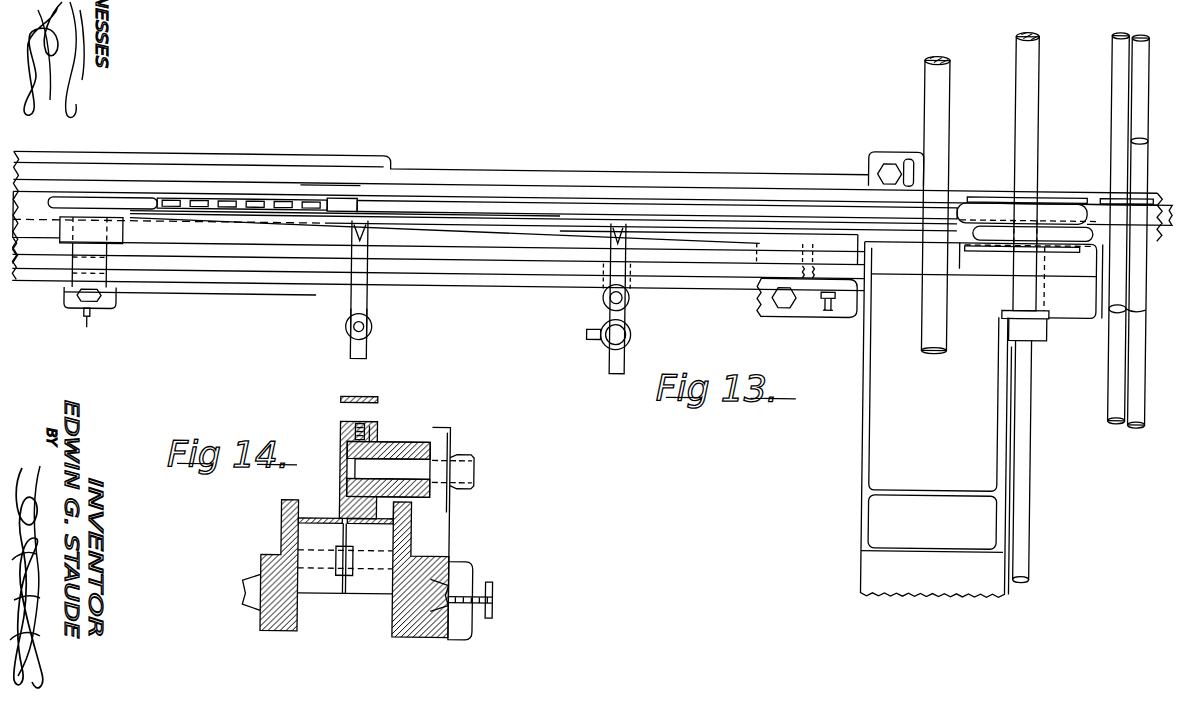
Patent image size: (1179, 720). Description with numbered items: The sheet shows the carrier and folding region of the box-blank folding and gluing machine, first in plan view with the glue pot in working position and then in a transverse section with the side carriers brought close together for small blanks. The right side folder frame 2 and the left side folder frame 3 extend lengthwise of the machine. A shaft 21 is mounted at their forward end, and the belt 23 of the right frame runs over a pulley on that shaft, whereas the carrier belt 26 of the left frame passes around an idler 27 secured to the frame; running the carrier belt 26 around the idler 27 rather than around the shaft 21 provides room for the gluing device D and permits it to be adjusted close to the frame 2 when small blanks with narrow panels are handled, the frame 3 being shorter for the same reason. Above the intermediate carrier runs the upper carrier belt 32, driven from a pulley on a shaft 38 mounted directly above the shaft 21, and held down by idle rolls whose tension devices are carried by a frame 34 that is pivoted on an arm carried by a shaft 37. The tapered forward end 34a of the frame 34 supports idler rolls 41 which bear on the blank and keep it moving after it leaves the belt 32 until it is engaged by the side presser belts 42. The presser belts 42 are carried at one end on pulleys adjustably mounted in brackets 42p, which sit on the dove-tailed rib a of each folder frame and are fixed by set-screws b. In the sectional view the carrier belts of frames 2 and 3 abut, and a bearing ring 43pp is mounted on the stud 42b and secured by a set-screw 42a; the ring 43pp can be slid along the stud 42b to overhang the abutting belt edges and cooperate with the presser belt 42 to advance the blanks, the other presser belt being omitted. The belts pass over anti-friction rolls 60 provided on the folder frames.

In FIG. 13, the right side folder frame 2 is at (475, 182).
In FIG. 14, the right side folder frame 2 is at (285, 536).
In FIG. 13, the left side folder frame 3 is at (480, 286).
In FIG. 14, the left side folder frame 3 is at (412, 636).
In FIG. 13, the shaft 21 is at (1114, 78).
In FIG. 13, the belt 23 is at (30, 202).
In FIG. 14, the belt 23 is at (332, 520).
In FIG. 13, the carrier belt 26 is at (262, 250).
In FIG. 14, the carrier belt 26 is at (420, 537).
In FIG. 13, the idler 27 is at (852, 282).
In FIG. 13, the upper carrier belt 32 is at (665, 208).
In FIG. 13, the frame 34 is at (346, 202).
In FIG. 13, the forward end of the frame 34a is at (105, 200).
In FIG. 13, the shaft 37 is at (923, 82).
In FIG. 13, the shaft 38 is at (1112, 143).
In FIG. 13, the idler rolls 41 is at (208, 208).
In FIG. 13, the side presser belts 42 is at (40, 238).
In FIG. 14, the side presser belts 42 is at (345, 520).
In FIG. 13, the brackets 42p is at (105, 296).
In FIG. 14, the brackets 42p is at (452, 433).
In FIG. 14, the set-screw 42a is at (372, 415).
In FIG. 14, the stud 42b is at (413, 472).
In FIG. 14, the ring 43pp is at (385, 430).
In FIG. 14, the anti-friction rolls 60 is at (320, 603).
In FIG. 13, the rib a is at (318, 165).
In FIG. 14, the rib a is at (255, 595).
In FIG. 13, the set-screws b is at (90, 332).
In FIG. 14, the set-screws b is at (496, 603).
In FIG. 13, the gluing device D is at (966, 246).